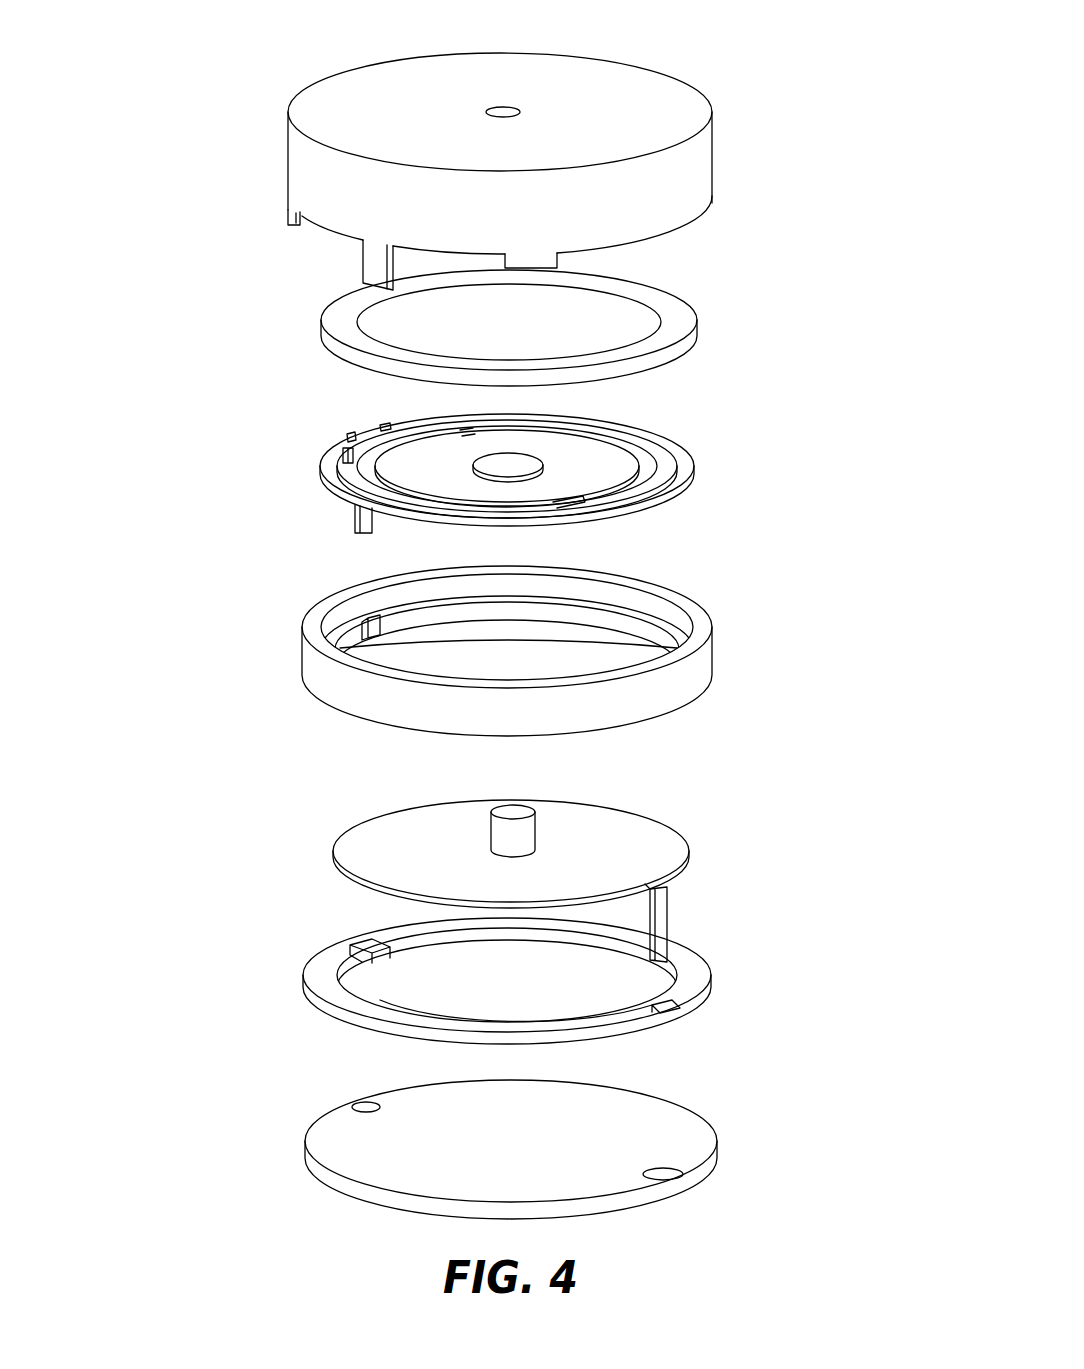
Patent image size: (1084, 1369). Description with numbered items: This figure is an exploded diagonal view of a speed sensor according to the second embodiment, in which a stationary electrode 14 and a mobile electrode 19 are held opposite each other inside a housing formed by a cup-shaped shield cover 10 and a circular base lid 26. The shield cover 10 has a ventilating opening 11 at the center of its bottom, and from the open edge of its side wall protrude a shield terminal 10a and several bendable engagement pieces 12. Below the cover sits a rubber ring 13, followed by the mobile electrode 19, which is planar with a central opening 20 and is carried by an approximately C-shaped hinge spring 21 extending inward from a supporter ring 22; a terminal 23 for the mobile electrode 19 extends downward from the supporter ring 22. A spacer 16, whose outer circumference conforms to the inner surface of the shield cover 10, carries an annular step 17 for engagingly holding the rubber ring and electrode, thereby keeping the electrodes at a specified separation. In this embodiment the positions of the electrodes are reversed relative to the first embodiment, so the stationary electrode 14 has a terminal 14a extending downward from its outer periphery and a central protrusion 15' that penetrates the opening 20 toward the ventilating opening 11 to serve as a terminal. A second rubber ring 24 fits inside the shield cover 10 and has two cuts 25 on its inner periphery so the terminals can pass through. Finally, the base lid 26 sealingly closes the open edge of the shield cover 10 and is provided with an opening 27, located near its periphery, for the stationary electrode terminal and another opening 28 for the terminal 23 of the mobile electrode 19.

The shield cover 10 is at (697, 176).
The ventilating opening 11 is at (503, 112).
The bendable engagement pieces 12 is at (290, 212).
The shield terminal 10a is at (376, 268).
The rubber ring 13 is at (685, 316).
The mobile electrode 19 is at (607, 466).
The opening 20 is at (523, 465).
The hinge spring 21 is at (365, 464).
The supporter ring 22 is at (688, 474).
The terminal 23 is at (355, 518).
The spacer 16 is at (703, 668).
The annular step 17 is at (652, 620).
The stationary electrode 14 is at (658, 848).
The protrusion 15' is at (568, 805).
The terminal 14a is at (660, 922).
The rubber ring 24 is at (692, 978).
The cuts 25 is at (362, 940).
The base lid 26 is at (683, 1128).
The opening 27 is at (675, 1176).
The opening 28 is at (360, 1106).